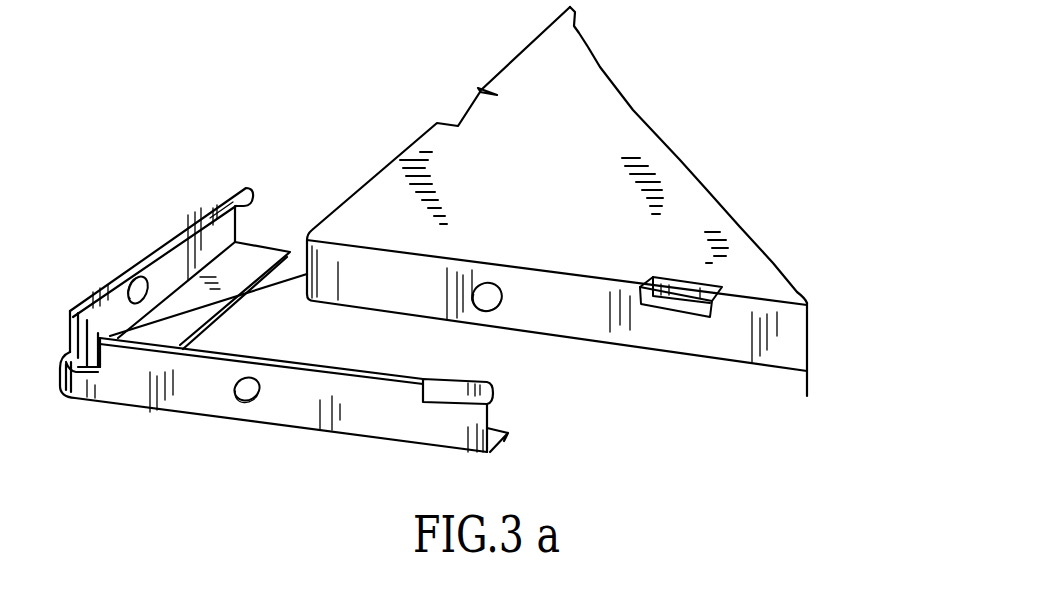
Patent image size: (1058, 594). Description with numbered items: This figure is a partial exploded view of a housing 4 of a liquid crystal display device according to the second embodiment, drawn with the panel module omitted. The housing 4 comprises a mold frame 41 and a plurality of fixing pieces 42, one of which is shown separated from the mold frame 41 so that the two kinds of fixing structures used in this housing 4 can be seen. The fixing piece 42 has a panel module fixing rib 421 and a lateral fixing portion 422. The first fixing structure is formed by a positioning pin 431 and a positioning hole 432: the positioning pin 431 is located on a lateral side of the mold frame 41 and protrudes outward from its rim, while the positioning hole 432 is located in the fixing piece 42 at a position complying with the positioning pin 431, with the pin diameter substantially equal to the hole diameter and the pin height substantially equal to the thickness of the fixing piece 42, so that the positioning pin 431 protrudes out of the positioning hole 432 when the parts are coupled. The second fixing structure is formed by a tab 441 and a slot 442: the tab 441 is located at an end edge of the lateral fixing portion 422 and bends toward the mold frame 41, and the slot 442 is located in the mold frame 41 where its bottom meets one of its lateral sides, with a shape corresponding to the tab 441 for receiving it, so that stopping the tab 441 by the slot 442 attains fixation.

The housing 4 is at (343, 99).
The mold frame 41 is at (592, 80).
The fixing piece 42 is at (322, 342).
The panel module fixing rib 421 is at (252, 262).
The lateral fixing portion 422 is at (365, 422).
The positioning pin 431 is at (487, 311).
The positioning hole 432 is at (243, 401).
The tab 441 is at (492, 405).
The slot 442 is at (696, 308).